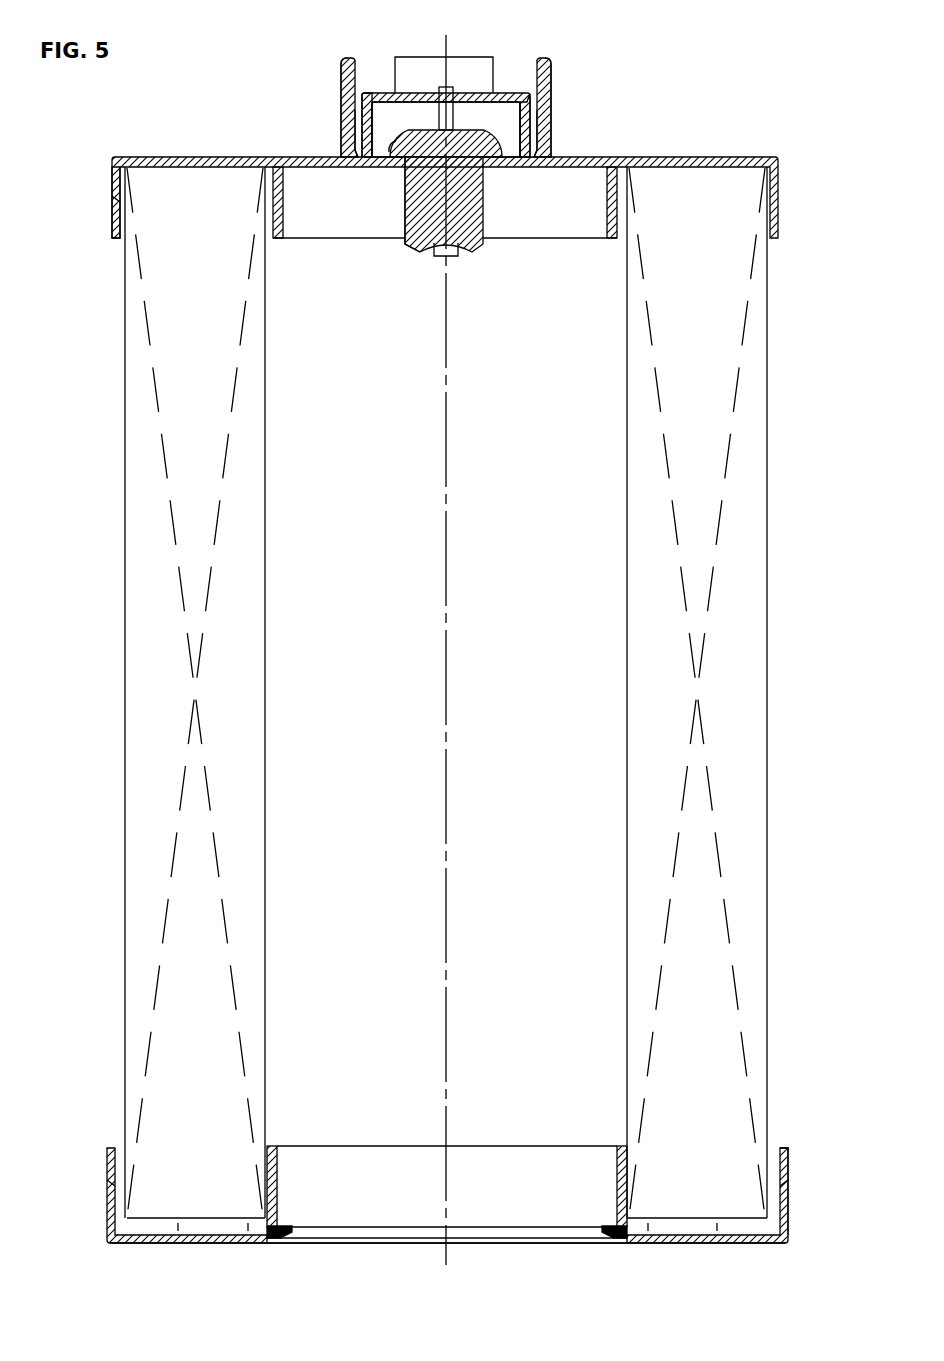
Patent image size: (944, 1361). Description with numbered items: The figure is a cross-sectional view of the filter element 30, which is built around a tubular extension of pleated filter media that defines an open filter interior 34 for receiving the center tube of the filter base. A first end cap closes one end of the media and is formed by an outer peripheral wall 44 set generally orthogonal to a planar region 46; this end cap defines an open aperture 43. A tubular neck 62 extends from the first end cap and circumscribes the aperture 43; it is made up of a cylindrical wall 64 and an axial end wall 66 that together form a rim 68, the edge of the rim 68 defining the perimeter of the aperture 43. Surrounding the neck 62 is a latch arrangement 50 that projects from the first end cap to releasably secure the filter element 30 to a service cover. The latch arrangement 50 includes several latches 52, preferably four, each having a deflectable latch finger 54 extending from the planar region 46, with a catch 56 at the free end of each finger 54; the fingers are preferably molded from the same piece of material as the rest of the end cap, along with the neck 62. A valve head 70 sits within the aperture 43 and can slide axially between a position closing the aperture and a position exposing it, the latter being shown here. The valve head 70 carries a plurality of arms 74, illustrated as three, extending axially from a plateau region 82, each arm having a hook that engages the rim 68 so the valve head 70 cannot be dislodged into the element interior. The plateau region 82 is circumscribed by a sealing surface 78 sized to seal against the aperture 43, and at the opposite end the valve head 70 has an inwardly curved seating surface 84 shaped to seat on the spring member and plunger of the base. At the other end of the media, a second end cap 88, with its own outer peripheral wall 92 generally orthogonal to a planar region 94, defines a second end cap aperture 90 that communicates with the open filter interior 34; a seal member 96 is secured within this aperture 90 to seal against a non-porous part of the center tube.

The filter element 30 is at (742, 84).
The open filter interior 34 is at (268, 683).
The open aperture 43 is at (477, 95).
The outer peripheral wall 44 is at (112, 218).
The planar region 46 is at (756, 156).
The latch arrangement 50 is at (303, 86).
The latches 52 is at (341, 110).
The latch finger 54 is at (341, 133).
The catch 56 is at (339, 68).
The tubular neck 62 is at (363, 95).
The cylindrical wall 64 is at (525, 139).
The axial end wall 66 is at (378, 95).
The rim 68 is at (411, 97).
The valve head 70 is at (406, 208).
The arms 74 is at (438, 115).
The sealing surface 78 is at (386, 150).
The plateau region 82 is at (466, 131).
The seating surface 84 is at (463, 247).
The second end cap 88 is at (788, 1217).
The second end cap aperture 90 is at (622, 1240).
The outer peripheral wall 92 is at (786, 1166).
The planar region 94 is at (756, 1246).
The seal member 96 is at (286, 1240).